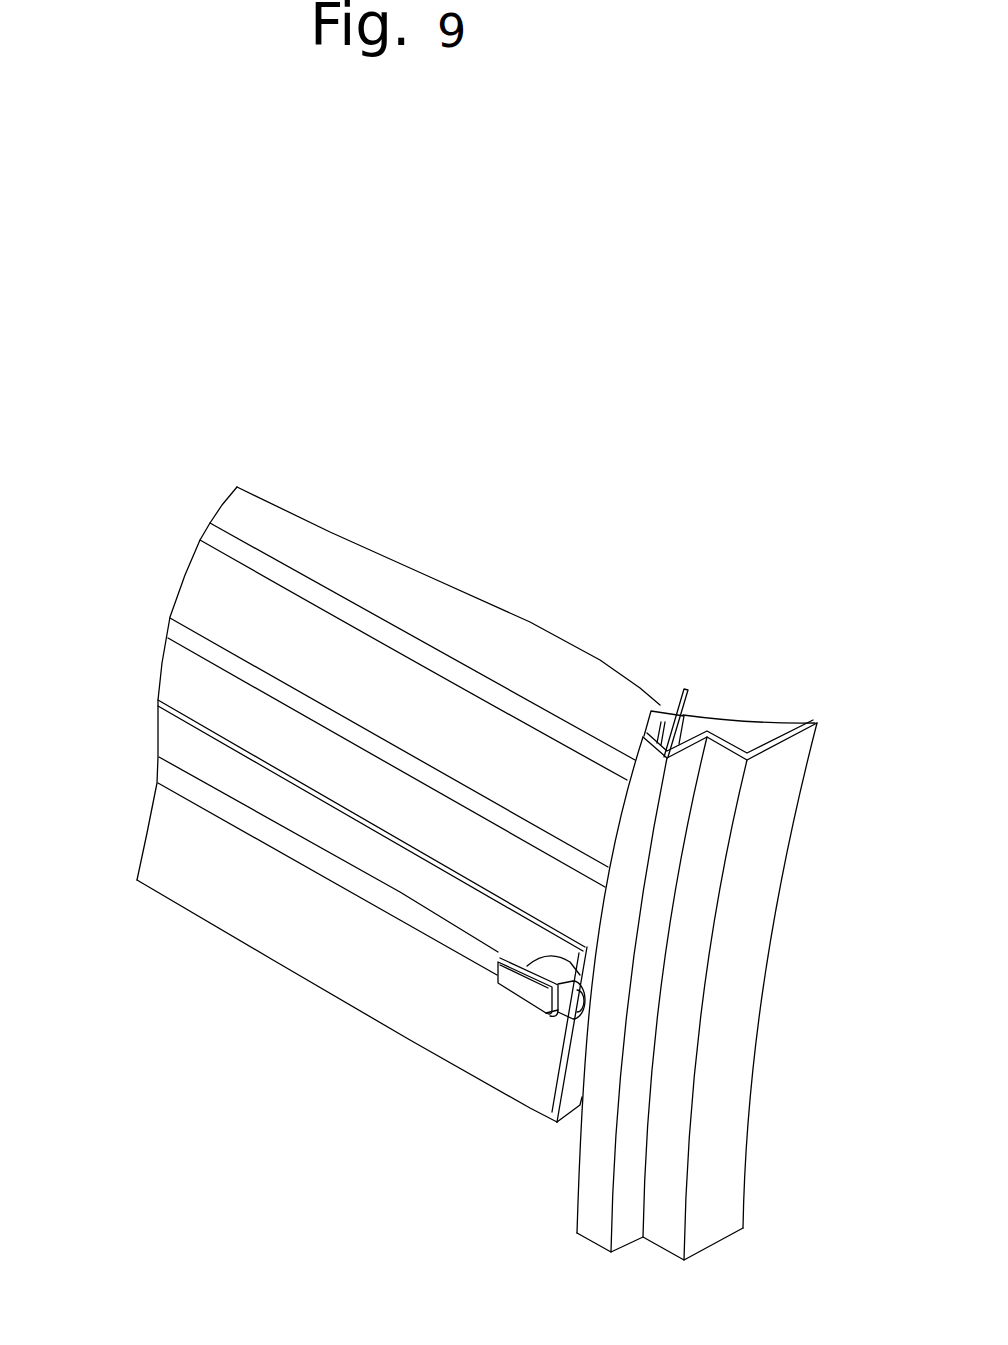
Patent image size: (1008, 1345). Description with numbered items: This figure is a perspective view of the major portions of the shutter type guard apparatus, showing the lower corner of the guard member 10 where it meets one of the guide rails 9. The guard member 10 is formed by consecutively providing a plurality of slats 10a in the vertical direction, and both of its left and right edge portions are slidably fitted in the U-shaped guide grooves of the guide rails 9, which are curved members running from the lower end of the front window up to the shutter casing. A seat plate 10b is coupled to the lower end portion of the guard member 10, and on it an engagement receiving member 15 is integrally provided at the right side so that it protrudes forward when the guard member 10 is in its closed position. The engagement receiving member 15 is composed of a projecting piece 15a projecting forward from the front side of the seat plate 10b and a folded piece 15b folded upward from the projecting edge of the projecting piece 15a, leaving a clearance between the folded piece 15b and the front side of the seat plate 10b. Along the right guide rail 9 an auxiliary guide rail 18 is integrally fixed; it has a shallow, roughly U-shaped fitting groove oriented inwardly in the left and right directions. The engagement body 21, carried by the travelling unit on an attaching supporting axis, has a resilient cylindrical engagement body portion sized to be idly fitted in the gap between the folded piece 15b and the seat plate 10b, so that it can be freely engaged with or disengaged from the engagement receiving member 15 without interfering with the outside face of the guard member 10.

The guide rail 9 is at (755, 883).
The guard member 10 is at (288, 633).
The slat 10a is at (535, 663).
The seat plate 10b is at (388, 855).
The engagement receiving member 15 is at (452, 997).
The projecting piece 15a is at (557, 1017).
The folded piece 15b is at (512, 975).
The auxiliary guide rail 18 is at (648, 942).
The engagement body 21 is at (560, 977).